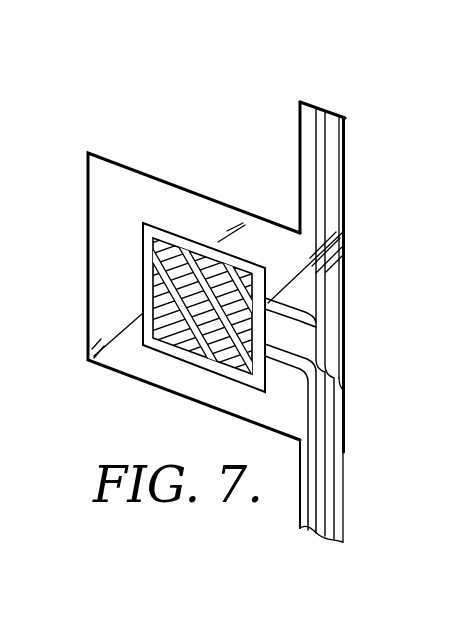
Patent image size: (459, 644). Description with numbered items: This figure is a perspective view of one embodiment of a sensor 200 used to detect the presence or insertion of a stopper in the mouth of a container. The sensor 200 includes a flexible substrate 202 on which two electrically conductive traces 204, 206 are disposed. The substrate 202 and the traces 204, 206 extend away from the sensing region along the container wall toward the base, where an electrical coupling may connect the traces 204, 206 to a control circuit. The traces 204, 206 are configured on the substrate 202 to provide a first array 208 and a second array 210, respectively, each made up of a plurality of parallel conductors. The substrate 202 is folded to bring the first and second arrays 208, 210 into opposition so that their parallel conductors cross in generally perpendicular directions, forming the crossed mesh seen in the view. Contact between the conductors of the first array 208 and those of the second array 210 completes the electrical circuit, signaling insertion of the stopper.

The sensor 200 is at (72, 108).
The flexible substrate 202 is at (197, 204).
The electrically conductive trace 204 is at (312, 532).
The electrically conductive trace 206 is at (330, 543).
The first array 208 is at (170, 358).
The second array 210 is at (157, 326).